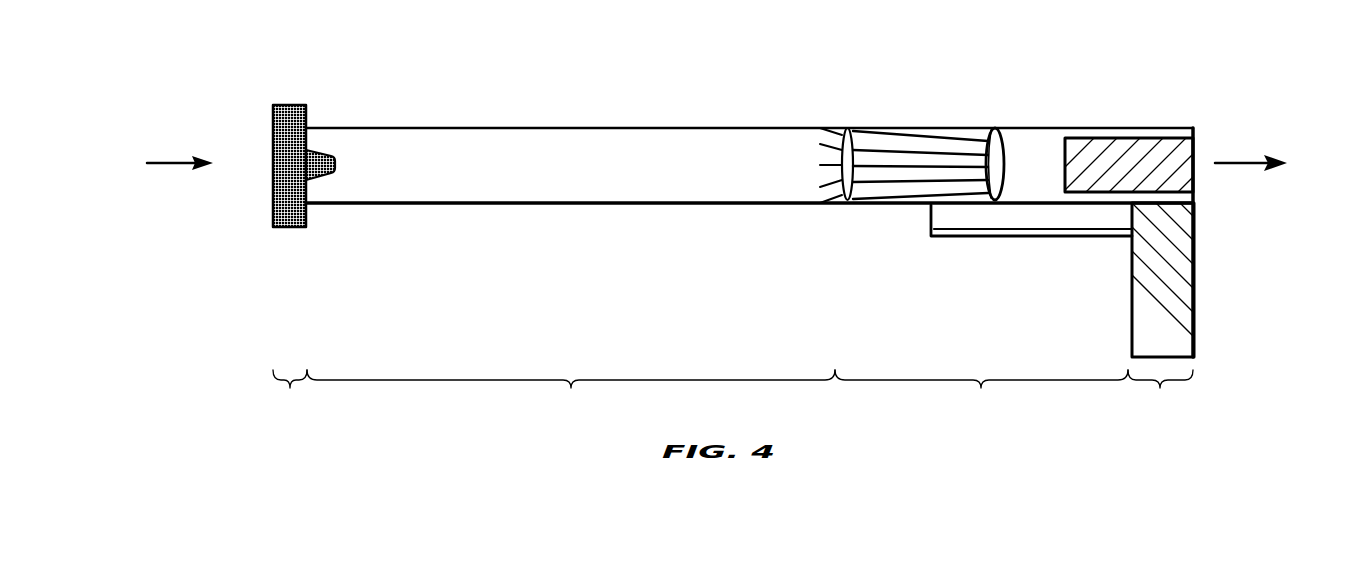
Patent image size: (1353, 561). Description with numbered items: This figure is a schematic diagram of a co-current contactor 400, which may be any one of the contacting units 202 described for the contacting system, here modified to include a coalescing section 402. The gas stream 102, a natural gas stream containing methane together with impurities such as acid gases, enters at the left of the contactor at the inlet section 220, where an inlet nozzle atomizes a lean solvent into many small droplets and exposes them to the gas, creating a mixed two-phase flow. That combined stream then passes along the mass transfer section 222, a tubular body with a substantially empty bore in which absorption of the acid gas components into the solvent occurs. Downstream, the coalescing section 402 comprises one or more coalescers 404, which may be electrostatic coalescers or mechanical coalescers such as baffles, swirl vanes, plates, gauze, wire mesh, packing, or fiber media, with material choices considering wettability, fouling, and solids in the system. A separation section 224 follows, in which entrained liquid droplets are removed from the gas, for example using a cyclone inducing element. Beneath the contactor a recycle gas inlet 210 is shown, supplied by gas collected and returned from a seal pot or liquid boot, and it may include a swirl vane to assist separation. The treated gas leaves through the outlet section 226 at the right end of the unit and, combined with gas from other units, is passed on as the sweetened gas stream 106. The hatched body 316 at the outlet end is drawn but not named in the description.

The co-current contactor 400 is at (240, 108).
The gas stream 102 is at (241, 165).
The sweetened gas stream 106 is at (1271, 163).
The contacting unit 202 is at (702, 127).
The coalescing section 402 is at (836, 308).
The coalescer 404 is at (840, 204).
The recycle gas inlet 210 is at (963, 240).
The mounting block 316 is at (1196, 262).
The inlet section 220 is at (291, 395).
The mass transfer section 222 is at (571, 395).
The separation section 224 is at (981, 395).
The outlet section 226 is at (1160, 395).